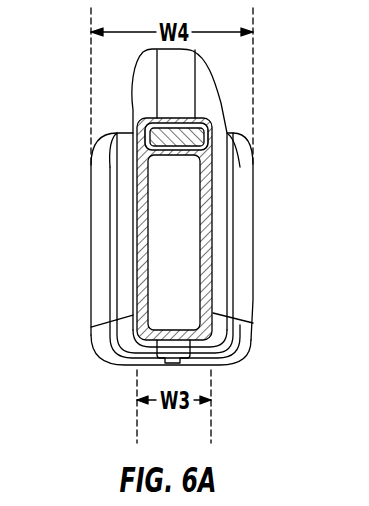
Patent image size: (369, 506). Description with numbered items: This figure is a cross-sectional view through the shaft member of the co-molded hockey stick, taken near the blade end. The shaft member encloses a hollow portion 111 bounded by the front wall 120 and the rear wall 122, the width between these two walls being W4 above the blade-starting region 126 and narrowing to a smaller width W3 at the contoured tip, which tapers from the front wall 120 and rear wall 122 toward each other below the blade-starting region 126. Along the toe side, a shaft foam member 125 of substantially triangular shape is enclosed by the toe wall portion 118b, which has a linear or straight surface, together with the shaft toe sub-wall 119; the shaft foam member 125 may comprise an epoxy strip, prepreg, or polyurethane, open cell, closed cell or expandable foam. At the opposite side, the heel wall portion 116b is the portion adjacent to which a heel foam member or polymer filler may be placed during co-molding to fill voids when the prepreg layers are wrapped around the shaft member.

The toe wall portion 118b is at (168, 87).
The shaft foam member 125 is at (150, 134).
The front wall 120 is at (130, 190).
The blade-starting region 126 is at (91, 213).
The hollow portion 111 is at (165, 283).
The shaft toe sub-wall 119 is at (182, 151).
The rear wall 122 is at (220, 264).
The heel wall portion 116b is at (160, 348).